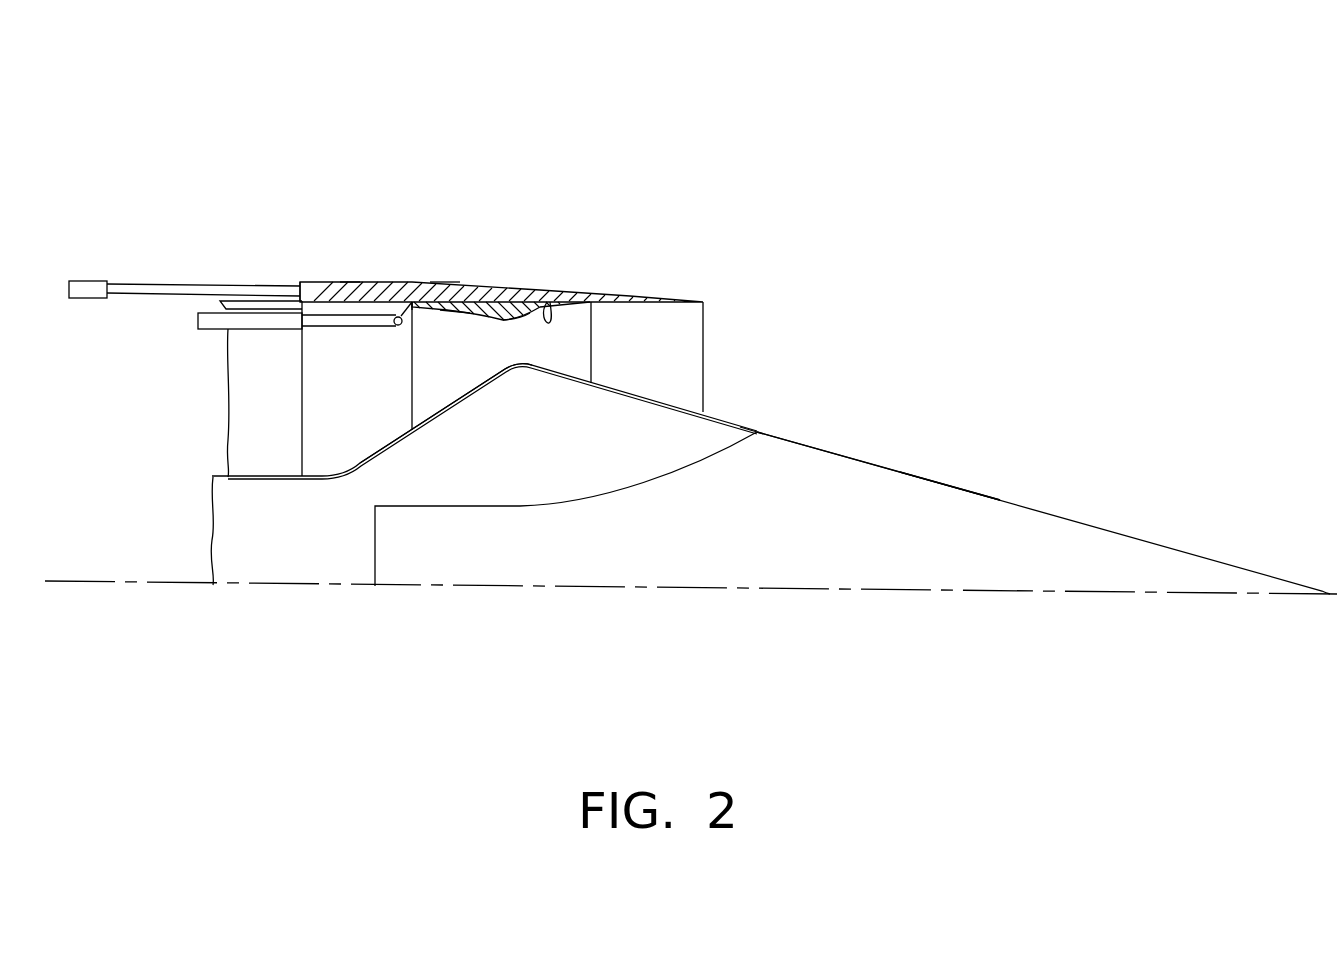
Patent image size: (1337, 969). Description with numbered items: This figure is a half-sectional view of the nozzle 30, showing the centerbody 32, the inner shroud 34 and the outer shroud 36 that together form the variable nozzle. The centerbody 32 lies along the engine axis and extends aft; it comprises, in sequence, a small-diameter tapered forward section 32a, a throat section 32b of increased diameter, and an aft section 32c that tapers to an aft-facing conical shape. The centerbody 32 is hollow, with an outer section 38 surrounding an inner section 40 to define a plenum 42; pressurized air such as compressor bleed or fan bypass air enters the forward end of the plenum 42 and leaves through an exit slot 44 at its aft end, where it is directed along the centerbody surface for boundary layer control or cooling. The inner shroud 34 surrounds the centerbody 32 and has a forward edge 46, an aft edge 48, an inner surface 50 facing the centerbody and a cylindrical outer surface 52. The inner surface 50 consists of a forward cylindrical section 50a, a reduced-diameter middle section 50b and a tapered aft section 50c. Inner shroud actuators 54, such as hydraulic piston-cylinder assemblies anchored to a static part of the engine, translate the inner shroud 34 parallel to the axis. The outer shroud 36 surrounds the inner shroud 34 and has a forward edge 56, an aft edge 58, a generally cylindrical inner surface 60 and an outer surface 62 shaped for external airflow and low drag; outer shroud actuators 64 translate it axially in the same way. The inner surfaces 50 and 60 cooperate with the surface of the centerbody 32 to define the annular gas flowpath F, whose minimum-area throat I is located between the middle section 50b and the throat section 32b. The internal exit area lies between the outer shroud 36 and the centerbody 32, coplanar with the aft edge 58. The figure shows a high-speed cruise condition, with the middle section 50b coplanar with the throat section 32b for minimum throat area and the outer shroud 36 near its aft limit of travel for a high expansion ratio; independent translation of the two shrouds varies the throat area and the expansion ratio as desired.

The nozzle 30 is at (660, 138).
The centerbody 32 is at (1038, 468).
The forward section 32a is at (391, 444).
The throat section 32b is at (535, 362).
The aft section 32c is at (818, 447).
The inner shroud 34 is at (470, 310).
The outer shroud 36 is at (372, 290).
The outer section 38 is at (643, 395).
The inner section 40 is at (933, 479).
The plenum 42 is at (533, 443).
The exit slot 44 is at (752, 432).
The forward edge 46 is at (407, 305).
The aft edge 48 is at (593, 317).
The inner surface 50 is at (452, 312).
The forward cylindrical section 50a is at (411, 312).
The middle section 50b is at (510, 318).
The tapered aft section 50c is at (548, 322).
The outer surface 52 is at (445, 300).
The inner shroud actuators 54 is at (228, 332).
The forward edge 56 is at (298, 285).
The aft edge 58 is at (703, 348).
The inner surface 60 is at (333, 302).
The outer surface 62 is at (347, 281).
The outer shroud actuators 64 is at (92, 280).
The gas flowpath F is at (640, 325).
The throat I is at (507, 356).